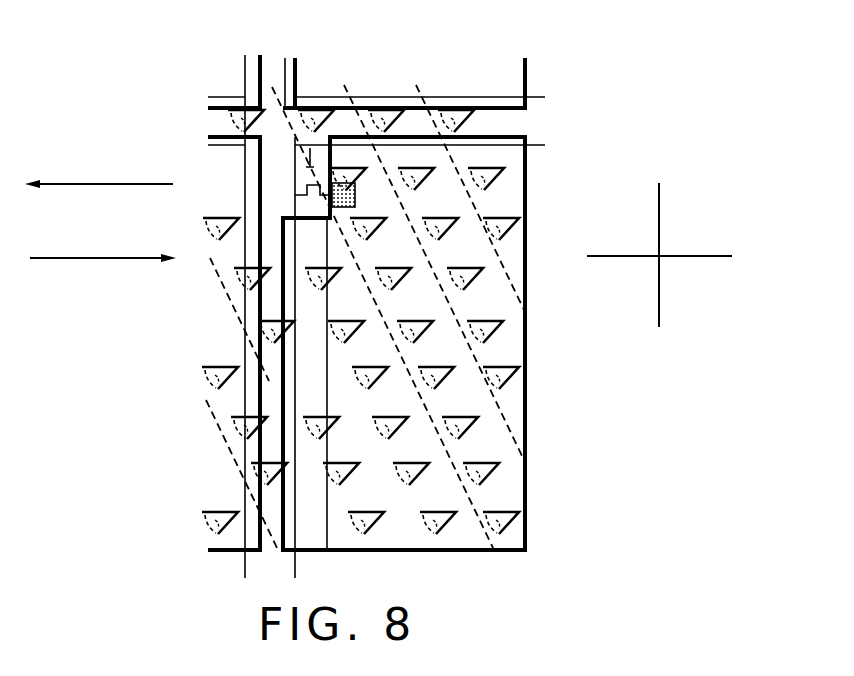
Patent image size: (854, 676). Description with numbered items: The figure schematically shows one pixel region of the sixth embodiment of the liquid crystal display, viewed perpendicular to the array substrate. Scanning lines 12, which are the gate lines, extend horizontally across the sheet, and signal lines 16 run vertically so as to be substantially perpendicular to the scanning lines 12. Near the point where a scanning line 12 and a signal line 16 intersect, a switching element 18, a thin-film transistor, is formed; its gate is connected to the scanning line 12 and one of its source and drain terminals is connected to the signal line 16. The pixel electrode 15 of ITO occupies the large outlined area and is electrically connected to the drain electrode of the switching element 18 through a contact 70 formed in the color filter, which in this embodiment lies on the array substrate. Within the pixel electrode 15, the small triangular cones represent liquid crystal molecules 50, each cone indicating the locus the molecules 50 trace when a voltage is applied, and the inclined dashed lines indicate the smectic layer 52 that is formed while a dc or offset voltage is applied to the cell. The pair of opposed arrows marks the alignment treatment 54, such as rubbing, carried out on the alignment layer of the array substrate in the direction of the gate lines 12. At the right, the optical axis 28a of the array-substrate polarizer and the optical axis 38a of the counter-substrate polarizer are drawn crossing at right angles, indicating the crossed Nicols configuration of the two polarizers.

The scanning line 12 is at (473, 110).
The pixel electrode 15 is at (524, 467).
The signal line 16 is at (258, 75).
The switching element 18 is at (305, 180).
The contact 70 is at (330, 202).
The liquid crystal molecules 50 is at (488, 183).
The smectic layer 52 is at (513, 293).
The alignment treatment 54 is at (105, 186).
The optical axis of polarizer 28a is at (660, 212).
The optical axis of polarizer 38a is at (708, 258).